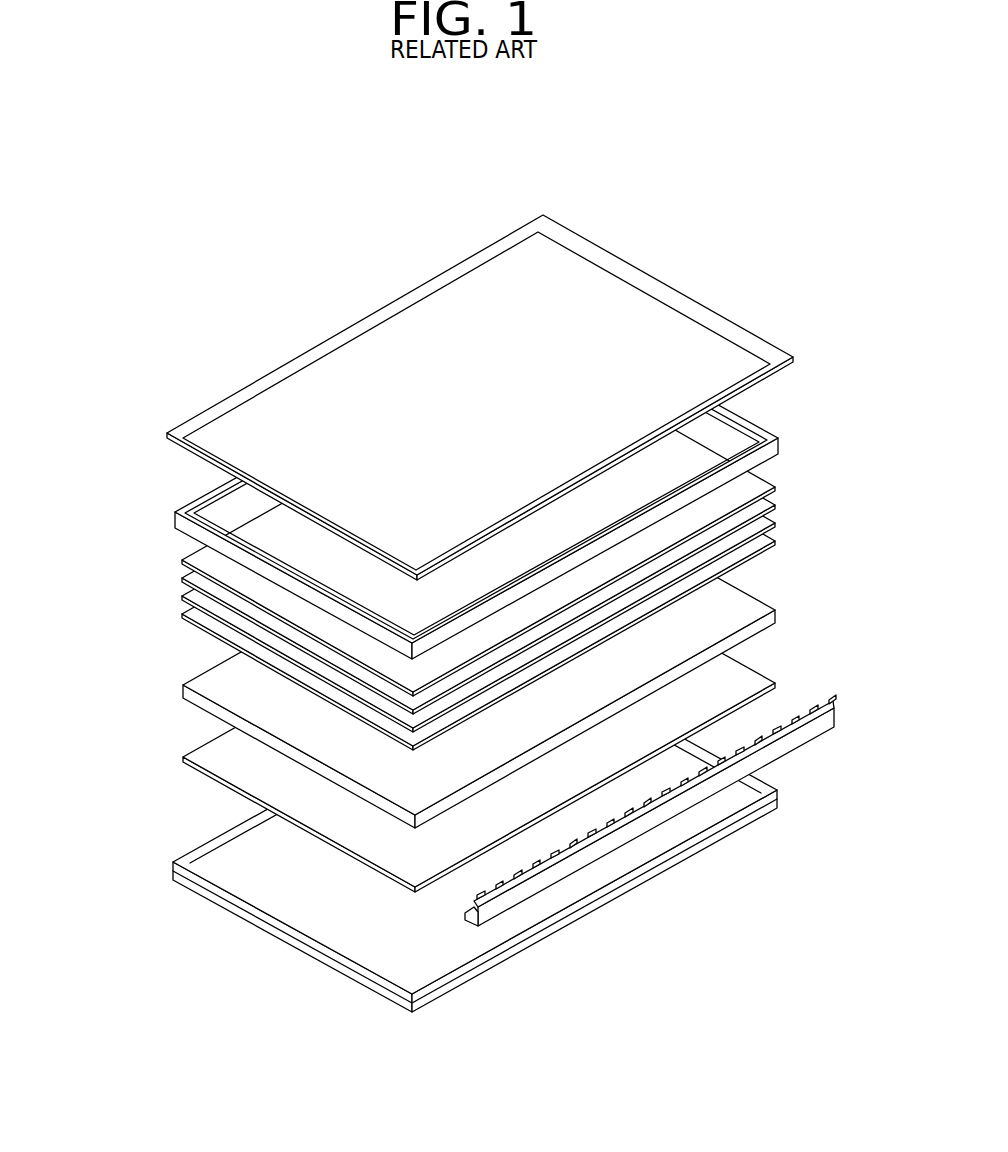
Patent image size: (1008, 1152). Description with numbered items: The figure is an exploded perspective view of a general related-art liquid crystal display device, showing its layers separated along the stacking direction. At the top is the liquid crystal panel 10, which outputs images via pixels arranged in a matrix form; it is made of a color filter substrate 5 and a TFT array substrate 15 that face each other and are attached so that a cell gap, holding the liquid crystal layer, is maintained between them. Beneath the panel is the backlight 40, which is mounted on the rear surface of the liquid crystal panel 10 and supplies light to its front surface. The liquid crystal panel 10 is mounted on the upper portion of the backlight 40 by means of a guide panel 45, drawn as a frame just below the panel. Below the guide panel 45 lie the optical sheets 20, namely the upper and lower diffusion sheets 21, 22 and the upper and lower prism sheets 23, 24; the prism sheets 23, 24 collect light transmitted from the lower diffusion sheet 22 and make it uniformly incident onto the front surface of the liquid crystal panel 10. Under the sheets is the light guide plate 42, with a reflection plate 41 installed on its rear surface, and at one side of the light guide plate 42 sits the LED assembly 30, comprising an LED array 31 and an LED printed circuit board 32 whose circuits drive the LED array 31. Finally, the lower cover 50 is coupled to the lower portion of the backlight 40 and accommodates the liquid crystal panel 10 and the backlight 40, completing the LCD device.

The color filter substrate 5 is at (235, 448).
The liquid crystal panel 10 is at (420, 397).
The TFT array substrate 15 is at (195, 420).
The optical sheets 20 is at (532, 552).
The upper diffusion sheet 21 is at (845, 571).
The lower diffusion sheet 22 is at (767, 542).
The upper prism sheet 23 is at (772, 505).
The lower prism sheet 24 is at (772, 523).
The LED assembly 30 is at (669, 810).
The LED array 31 is at (770, 737).
The LED printed circuit board 32 is at (723, 777).
The backlight 40 is at (411, 686).
The reflection plate 41 is at (205, 753).
The light guide plate 42 is at (84, 508).
The guide panel 45 is at (182, 520).
The lower cover 50 is at (178, 868).